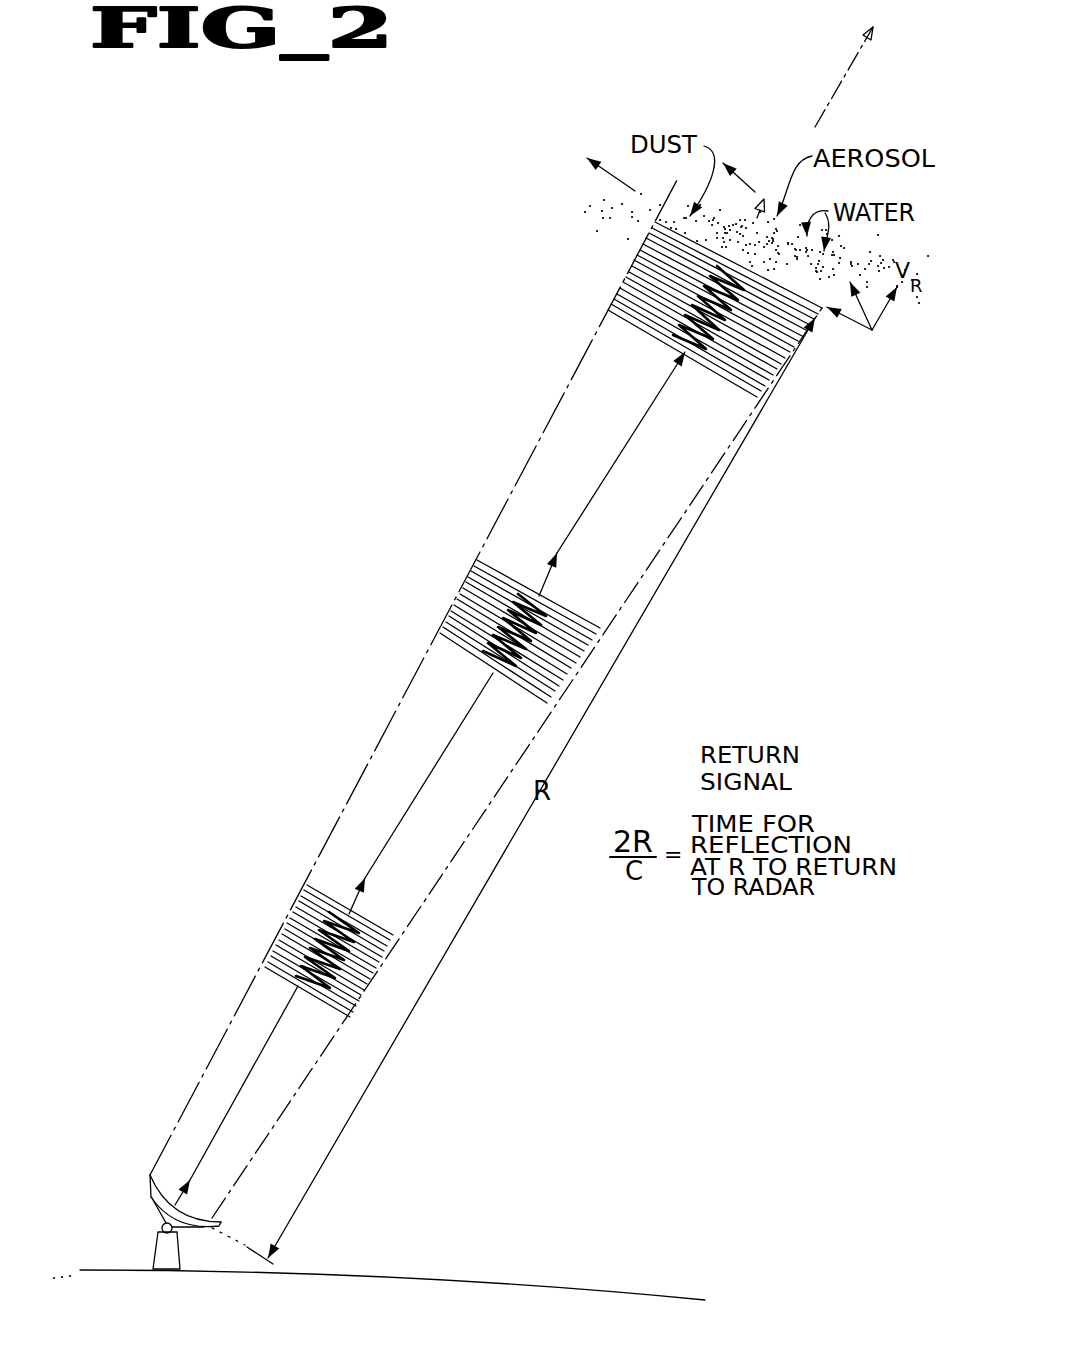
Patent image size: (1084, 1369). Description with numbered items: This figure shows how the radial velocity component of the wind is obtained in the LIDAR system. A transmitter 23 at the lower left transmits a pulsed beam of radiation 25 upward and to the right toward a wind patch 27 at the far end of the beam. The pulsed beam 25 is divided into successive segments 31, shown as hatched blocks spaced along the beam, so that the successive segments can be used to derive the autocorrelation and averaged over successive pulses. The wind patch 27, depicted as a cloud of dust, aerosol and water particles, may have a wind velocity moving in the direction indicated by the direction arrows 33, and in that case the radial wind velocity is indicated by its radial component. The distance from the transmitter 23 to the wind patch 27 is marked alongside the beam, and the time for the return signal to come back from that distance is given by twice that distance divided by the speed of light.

The transmitter 23 is at (142, 1181).
The pulsed beam of radiation 25 is at (455, 742).
The wind patch 27 is at (713, 101).
The successive segments 31 is at (443, 634).
The direction arrows 33 is at (600, 180).